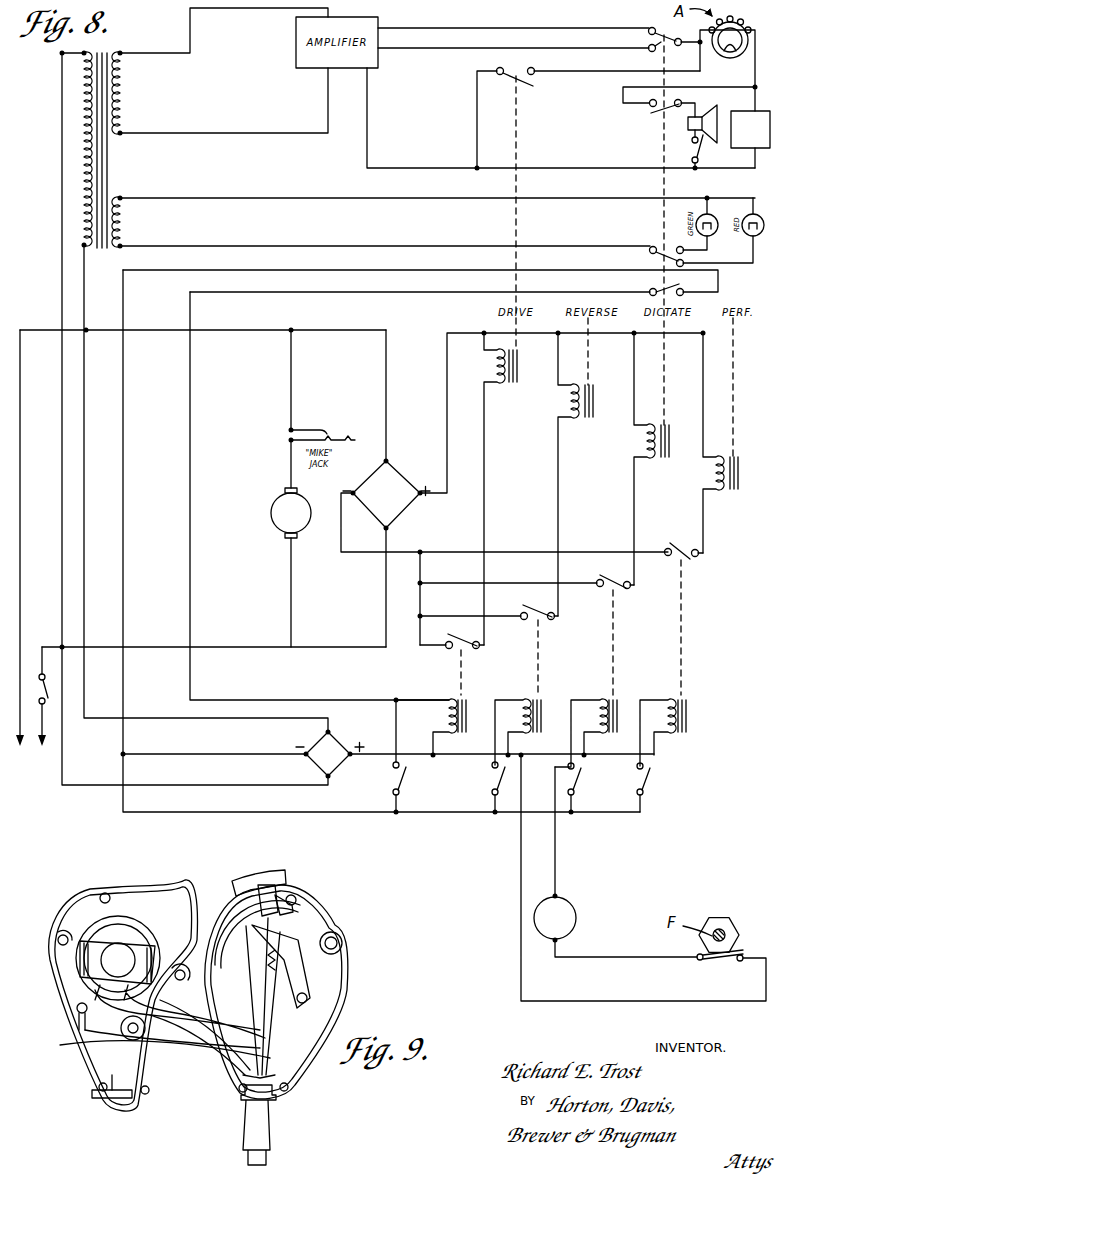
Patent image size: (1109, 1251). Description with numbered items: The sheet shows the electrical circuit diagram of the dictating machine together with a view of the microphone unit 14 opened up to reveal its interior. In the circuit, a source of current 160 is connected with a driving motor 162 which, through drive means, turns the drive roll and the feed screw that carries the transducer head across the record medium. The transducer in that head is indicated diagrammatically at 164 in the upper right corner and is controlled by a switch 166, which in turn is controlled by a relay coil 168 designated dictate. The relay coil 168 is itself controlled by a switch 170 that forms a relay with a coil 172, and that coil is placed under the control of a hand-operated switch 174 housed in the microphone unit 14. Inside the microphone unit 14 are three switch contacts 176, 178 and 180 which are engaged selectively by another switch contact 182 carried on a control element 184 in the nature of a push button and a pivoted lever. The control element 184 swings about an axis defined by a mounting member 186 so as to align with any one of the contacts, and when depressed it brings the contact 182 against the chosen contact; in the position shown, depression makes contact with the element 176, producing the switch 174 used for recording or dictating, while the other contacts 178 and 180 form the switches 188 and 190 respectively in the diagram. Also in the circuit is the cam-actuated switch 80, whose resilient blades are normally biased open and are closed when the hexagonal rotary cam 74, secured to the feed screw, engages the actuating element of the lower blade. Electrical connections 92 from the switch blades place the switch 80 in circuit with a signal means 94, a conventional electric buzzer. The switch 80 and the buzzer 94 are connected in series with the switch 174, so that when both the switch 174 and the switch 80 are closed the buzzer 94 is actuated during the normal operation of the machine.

In FIG. 8, the microphone unit 14 is at (761, 108).
In FIG. 9, the microphone unit 14 is at (65, 896).
In FIG. 8, the source of current 160 is at (27, 752).
In FIG. 8, the driving motor 162 is at (279, 532).
In FIG. 8, the transducer 164 is at (749, 27).
In FIG. 8, the switch 166 is at (659, 28).
In FIG. 8, the relay coil 168 is at (655, 466).
In FIG. 8, the switch 170 is at (617, 574).
In FIG. 8, the coil 172 is at (623, 699).
In FIG. 8, the manually operated switch 174 is at (580, 787).
In FIG. 9, the manually operated switch 174 is at (293, 910).
In FIG. 9, the switch contact 176 is at (240, 908).
In FIG. 9, the switch contact 178 is at (250, 927).
In FIG. 9, the switch contact 180 is at (176, 984).
In FIG. 9, the switch contact 182 is at (290, 897).
In FIG. 9, the control element 184 is at (263, 880).
In FIG. 9, the mounting member 186 is at (290, 972).
In FIG. 8, the switch 188 is at (488, 782).
In FIG. 8, the switch 190 is at (391, 783).
In FIG. 8, the rotary cam 74 is at (726, 920).
In FIG. 8, the switch 80 is at (729, 963).
In FIG. 8, the electrical connections 92 is at (592, 960).
In FIG. 8, the signal means 94 is at (575, 931).